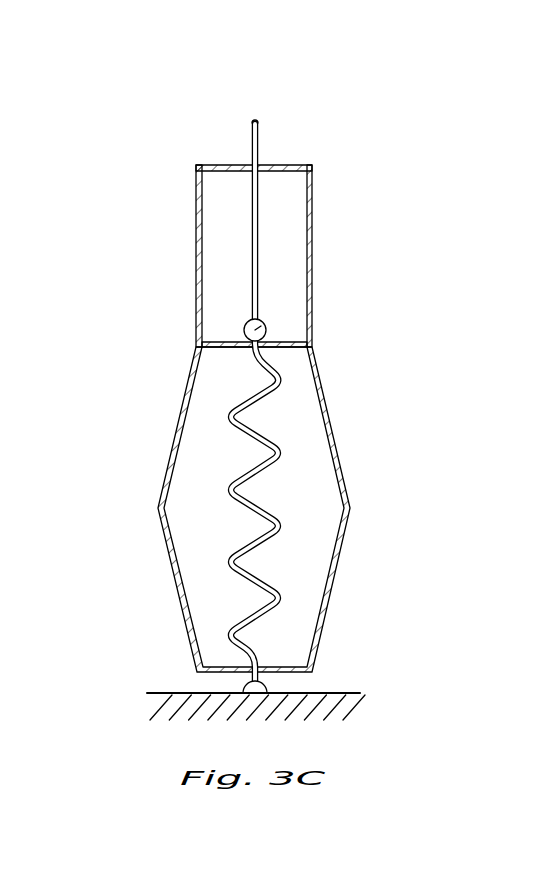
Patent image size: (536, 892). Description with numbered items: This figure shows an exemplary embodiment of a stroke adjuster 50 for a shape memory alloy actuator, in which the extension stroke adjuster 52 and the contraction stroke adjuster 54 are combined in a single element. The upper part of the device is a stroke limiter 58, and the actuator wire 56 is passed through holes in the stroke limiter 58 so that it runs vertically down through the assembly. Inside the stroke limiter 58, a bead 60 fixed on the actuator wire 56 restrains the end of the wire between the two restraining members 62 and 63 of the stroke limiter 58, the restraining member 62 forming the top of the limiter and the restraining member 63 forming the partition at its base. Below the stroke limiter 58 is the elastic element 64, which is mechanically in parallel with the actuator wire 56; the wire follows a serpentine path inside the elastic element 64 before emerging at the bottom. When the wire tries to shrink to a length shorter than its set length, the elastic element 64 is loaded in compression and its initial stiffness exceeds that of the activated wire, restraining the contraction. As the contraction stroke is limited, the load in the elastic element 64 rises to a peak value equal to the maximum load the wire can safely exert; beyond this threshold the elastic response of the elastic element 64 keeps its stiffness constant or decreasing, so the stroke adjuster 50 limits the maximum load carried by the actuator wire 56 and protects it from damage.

The stroke adjuster 50 is at (372, 156).
The extension stroke adjuster 52 is at (153, 165).
The contraction stroke adjuster 54 is at (153, 348).
The actuator wire 56 is at (250, 148).
The stroke limiter 58 is at (313, 229).
The bead 60 is at (263, 327).
The restraining member 62 is at (278, 166).
The restraining member 63 is at (290, 343).
The elastic element 64 is at (331, 590).